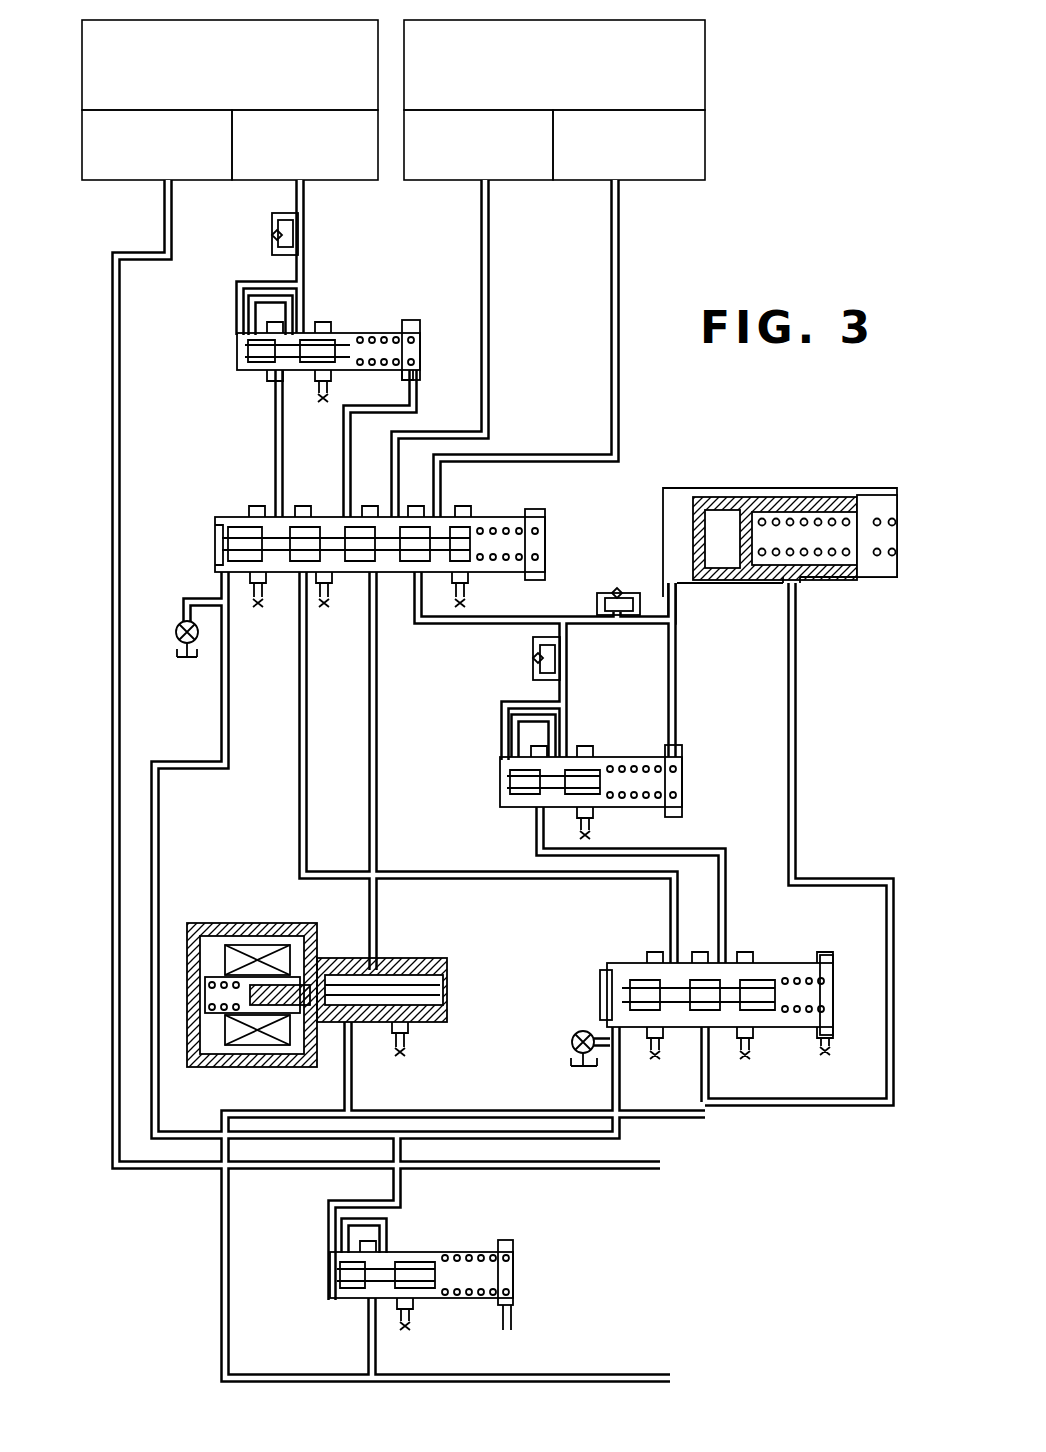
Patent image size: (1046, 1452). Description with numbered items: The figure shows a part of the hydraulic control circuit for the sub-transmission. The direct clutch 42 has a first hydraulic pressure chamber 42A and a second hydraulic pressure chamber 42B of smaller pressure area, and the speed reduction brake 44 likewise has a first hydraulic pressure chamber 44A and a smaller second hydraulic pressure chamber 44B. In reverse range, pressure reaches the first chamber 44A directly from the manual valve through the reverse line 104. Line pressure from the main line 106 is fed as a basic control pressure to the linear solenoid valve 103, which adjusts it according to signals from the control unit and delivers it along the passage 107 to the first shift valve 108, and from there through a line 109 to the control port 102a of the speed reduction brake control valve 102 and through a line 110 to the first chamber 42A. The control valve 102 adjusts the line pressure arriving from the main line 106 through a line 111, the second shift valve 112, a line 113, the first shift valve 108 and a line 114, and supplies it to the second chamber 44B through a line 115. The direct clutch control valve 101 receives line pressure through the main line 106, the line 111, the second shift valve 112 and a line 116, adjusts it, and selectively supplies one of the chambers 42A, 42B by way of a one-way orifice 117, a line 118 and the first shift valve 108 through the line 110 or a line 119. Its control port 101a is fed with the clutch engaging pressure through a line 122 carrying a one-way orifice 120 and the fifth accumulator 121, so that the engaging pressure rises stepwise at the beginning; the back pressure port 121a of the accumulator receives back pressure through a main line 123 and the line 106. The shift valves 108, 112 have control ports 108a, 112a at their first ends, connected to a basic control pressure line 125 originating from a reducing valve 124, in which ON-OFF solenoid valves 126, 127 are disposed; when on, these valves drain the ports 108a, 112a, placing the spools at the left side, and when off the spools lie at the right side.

The speed reduction brake 44 is at (82, 86).
The first hydraulic pressure chamber 44A is at (143, 182).
The second hydraulic pressure chamber 44B is at (325, 183).
The direct clutch 42 is at (706, 72).
The first hydraulic pressure chamber 42A is at (503, 182).
The second hydraulic pressure chamber 42B is at (665, 183).
The line 115 is at (305, 263).
The speed reduction brake control valve 102 is at (376, 324).
The line 119 is at (621, 264).
The reverse line 104 is at (122, 322).
The line 110 is at (490, 346).
The control port 102a is at (405, 385).
The line 114 is at (276, 442).
The line 109 is at (349, 432).
The fifth accumulator 121 is at (815, 480).
The first shift valve 108 is at (540, 516).
The control port 108a is at (222, 562).
The ON-OFF solenoid valve 126 is at (181, 623).
The one-way orifice 120 is at (618, 625).
The line 118 is at (470, 627).
The line 122 is at (682, 656).
The back pressure port 121a is at (797, 596).
The one-way orifice 117 is at (562, 668).
The direct clutch control valve 101 is at (606, 756).
The control port 101a is at (684, 750).
The basic control pressure line 125 is at (228, 752).
The oil passage 107 is at (378, 776).
The line 116 is at (660, 852).
The main line 123 is at (798, 830).
The linear solenoid valve 103 is at (415, 952).
The line 113 is at (520, 880).
The second shift valve 112 is at (775, 955).
The control port 112a is at (602, 990).
The ON-OFF solenoid valve 127 is at (571, 1038).
The main line 106 is at (449, 1110).
The line 111 is at (711, 1076).
The reducing valve 124 is at (440, 1244).